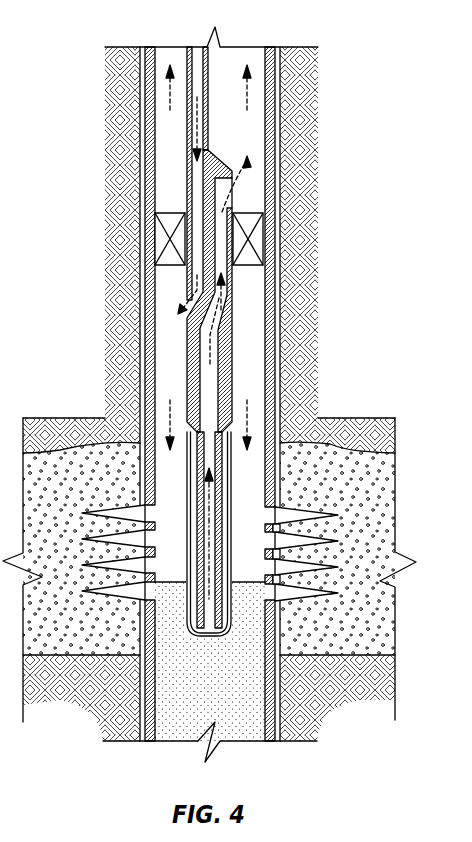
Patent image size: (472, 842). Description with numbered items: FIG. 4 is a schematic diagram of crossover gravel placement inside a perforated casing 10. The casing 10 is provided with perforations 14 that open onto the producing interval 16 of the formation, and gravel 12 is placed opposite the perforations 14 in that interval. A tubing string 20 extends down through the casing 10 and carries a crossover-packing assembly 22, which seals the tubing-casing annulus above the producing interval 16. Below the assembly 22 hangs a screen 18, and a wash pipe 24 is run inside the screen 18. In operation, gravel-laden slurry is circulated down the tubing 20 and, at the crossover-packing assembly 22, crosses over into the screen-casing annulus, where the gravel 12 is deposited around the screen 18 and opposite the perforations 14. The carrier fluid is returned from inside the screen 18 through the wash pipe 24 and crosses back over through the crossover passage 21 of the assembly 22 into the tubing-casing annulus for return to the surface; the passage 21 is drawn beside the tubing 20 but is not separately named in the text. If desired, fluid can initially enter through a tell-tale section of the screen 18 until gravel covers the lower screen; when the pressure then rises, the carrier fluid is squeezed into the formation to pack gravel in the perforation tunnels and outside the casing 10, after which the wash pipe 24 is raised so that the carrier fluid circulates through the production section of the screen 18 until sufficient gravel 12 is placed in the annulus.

The perforated casing 10 is at (283, 404).
The gravel 12 is at (256, 726).
The perforations 14 is at (110, 507).
The producing interval 16 is at (375, 502).
The screen 18 is at (187, 520).
The tubing string 20 is at (187, 56).
The crossover tube 21 is at (252, 298).
The crossover-packing assembly 22 is at (258, 240).
The wash pipe 24 is at (232, 520).